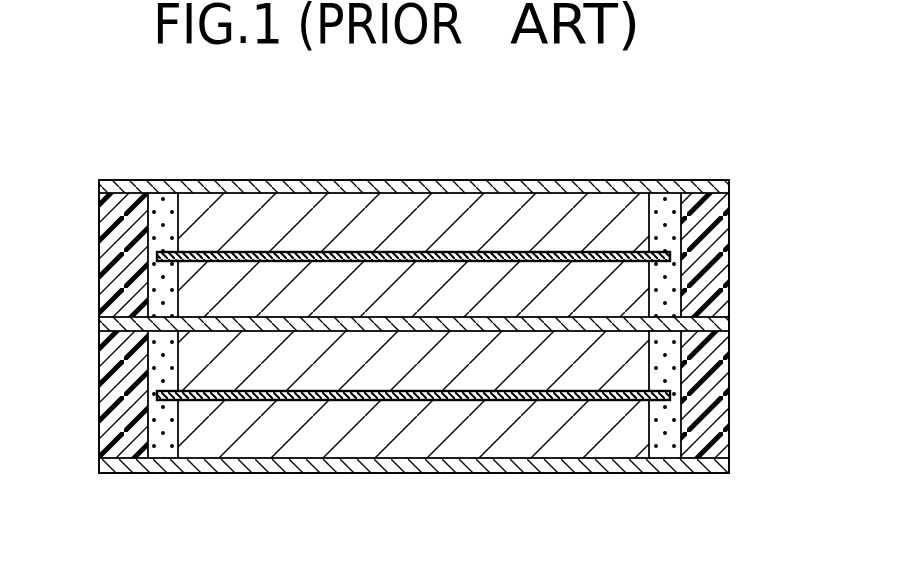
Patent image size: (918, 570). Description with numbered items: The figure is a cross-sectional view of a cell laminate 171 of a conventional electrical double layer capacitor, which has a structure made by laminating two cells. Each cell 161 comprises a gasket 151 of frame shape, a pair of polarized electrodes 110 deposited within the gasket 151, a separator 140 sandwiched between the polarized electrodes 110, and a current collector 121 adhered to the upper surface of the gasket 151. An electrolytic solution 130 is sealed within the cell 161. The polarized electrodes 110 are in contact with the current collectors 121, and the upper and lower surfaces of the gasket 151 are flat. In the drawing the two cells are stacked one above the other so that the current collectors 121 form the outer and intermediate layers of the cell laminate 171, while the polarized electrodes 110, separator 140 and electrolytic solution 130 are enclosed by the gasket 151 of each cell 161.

The cell laminate 171 is at (677, 143).
The cell 161 is at (85, 325).
The gasket 151 is at (718, 397).
The separator 140 is at (681, 253).
The electrolytic solution 130 is at (660, 453).
The current collector 121 is at (332, 468).
The polarized electrode 110 is at (473, 443).